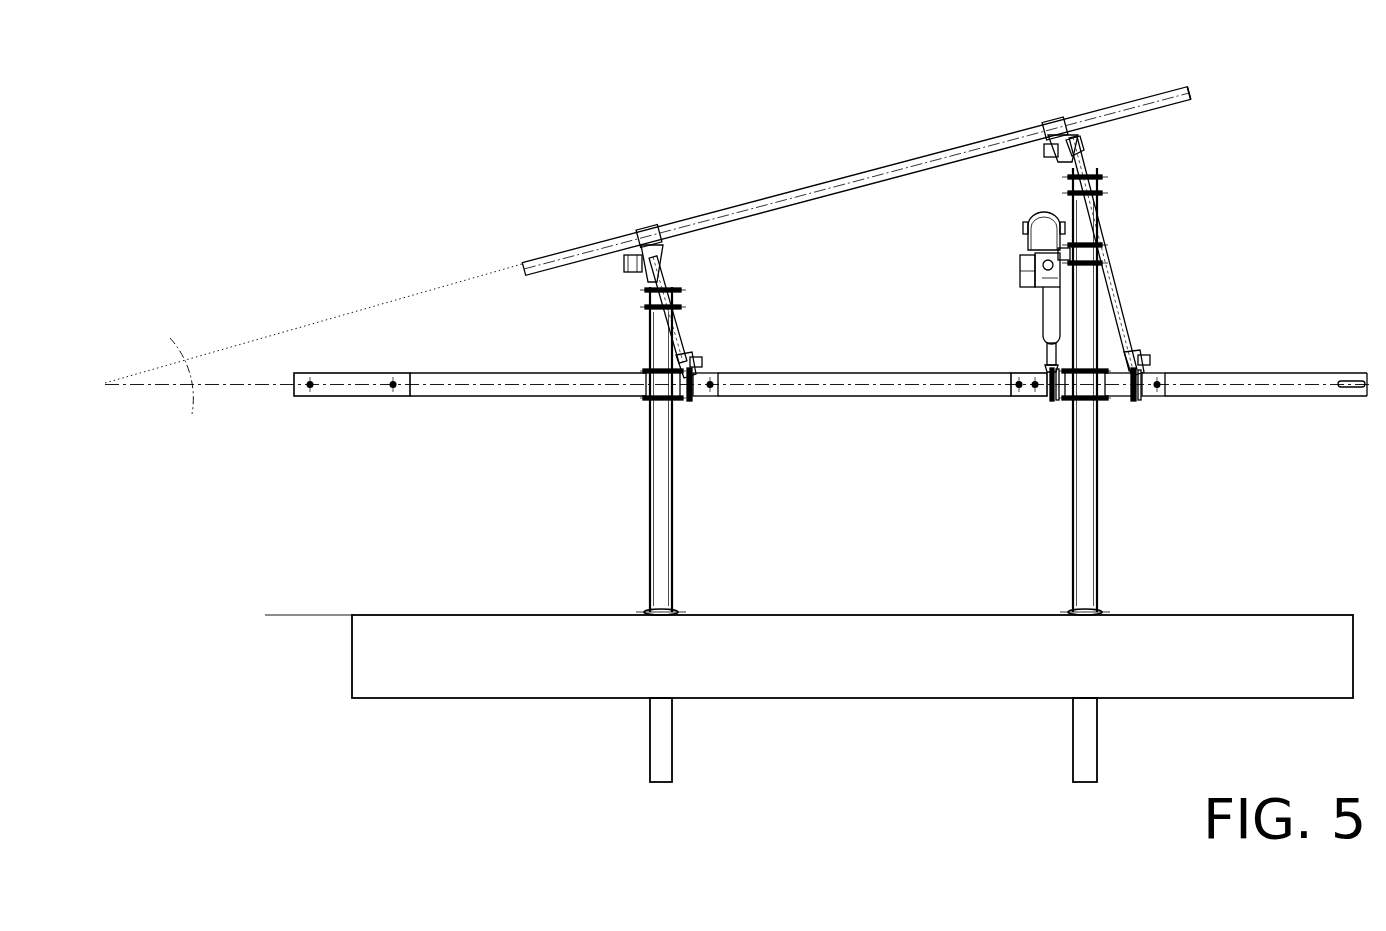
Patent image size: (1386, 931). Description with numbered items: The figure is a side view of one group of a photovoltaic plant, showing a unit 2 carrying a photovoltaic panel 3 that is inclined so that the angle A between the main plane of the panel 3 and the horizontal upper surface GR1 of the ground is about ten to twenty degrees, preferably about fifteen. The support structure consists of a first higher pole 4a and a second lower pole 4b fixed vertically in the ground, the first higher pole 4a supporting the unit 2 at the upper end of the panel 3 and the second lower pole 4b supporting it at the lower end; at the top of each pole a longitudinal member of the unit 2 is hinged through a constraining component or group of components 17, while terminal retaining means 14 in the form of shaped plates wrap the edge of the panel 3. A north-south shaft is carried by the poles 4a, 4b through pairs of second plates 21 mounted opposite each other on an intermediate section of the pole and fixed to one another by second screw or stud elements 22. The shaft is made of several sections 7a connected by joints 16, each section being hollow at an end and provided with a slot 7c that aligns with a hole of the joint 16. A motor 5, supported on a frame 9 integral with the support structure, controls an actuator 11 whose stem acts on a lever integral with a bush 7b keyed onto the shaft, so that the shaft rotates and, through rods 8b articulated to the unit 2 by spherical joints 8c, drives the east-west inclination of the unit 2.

The unit 2 is at (1190, 86).
The photovoltaic panel 3 is at (905, 166).
The first higher pole 4a is at (1097, 546).
The second lower pole 4b is at (673, 546).
The motor 5 is at (1028, 240).
The shaft section 7a is at (535, 396).
The bush 7b is at (1043, 396).
The slot 7c is at (1345, 380).
The rod 8b is at (683, 326).
The spherical joint 8c is at (1082, 140).
The support component or frame 9 is at (1105, 245).
The actuator 11 is at (1043, 325).
The terminal retaining means 14 is at (648, 228).
The joint 16 is at (345, 396).
The constraining component or group of components 17 is at (681, 290).
The second plate 21 is at (645, 385).
The second screw or stud element 22 is at (665, 400).
The horizontal upper surface of the ground GR1 is at (415, 615).
The angle A is at (201, 372).